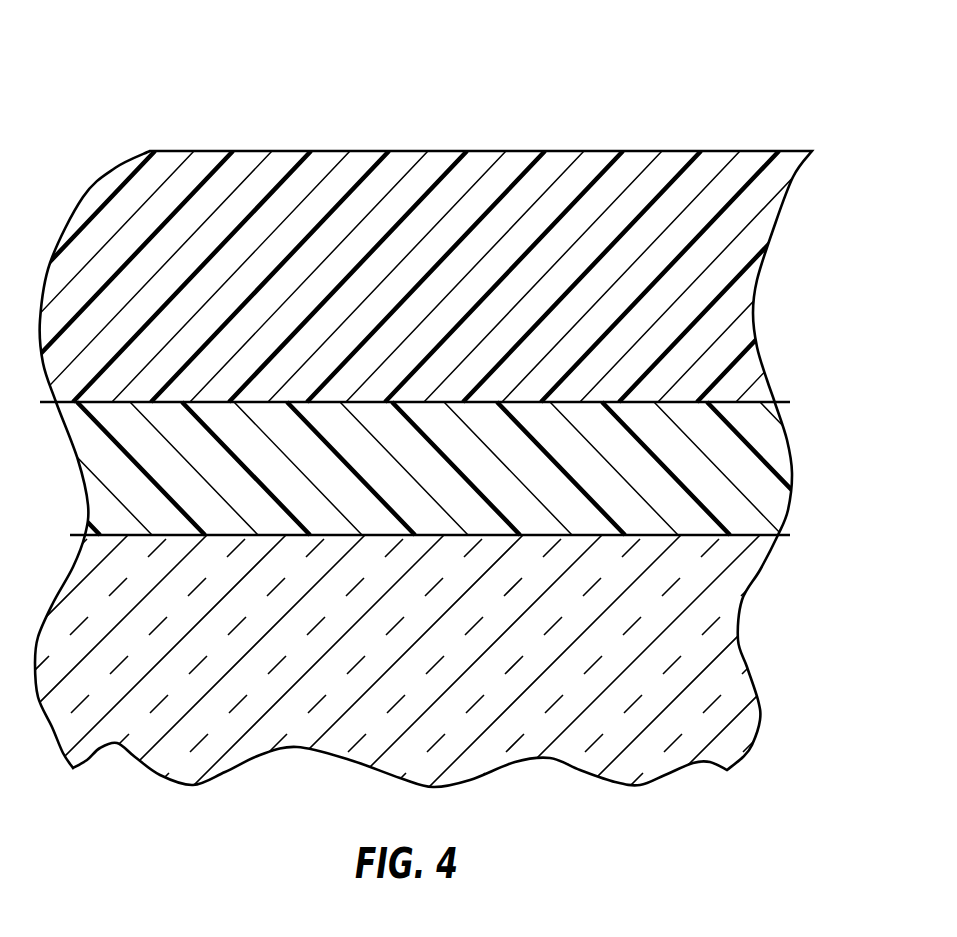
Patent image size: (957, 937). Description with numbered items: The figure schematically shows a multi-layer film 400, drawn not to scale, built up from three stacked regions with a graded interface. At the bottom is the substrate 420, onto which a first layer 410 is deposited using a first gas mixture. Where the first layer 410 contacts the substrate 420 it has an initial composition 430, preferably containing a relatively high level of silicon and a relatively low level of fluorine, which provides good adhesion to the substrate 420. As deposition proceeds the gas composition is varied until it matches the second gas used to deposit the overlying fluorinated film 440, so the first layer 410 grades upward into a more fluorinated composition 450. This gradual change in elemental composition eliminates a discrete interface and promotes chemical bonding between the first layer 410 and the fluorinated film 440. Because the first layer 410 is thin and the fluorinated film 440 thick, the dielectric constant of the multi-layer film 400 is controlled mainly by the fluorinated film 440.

The multi-layer film 400 is at (709, 65).
The fluorinated film 440 is at (728, 277).
The more fluorinated composition 450 is at (723, 400).
The first layer 410 is at (757, 485).
The initial composition 430 is at (740, 537).
The substrate 420 is at (703, 652).